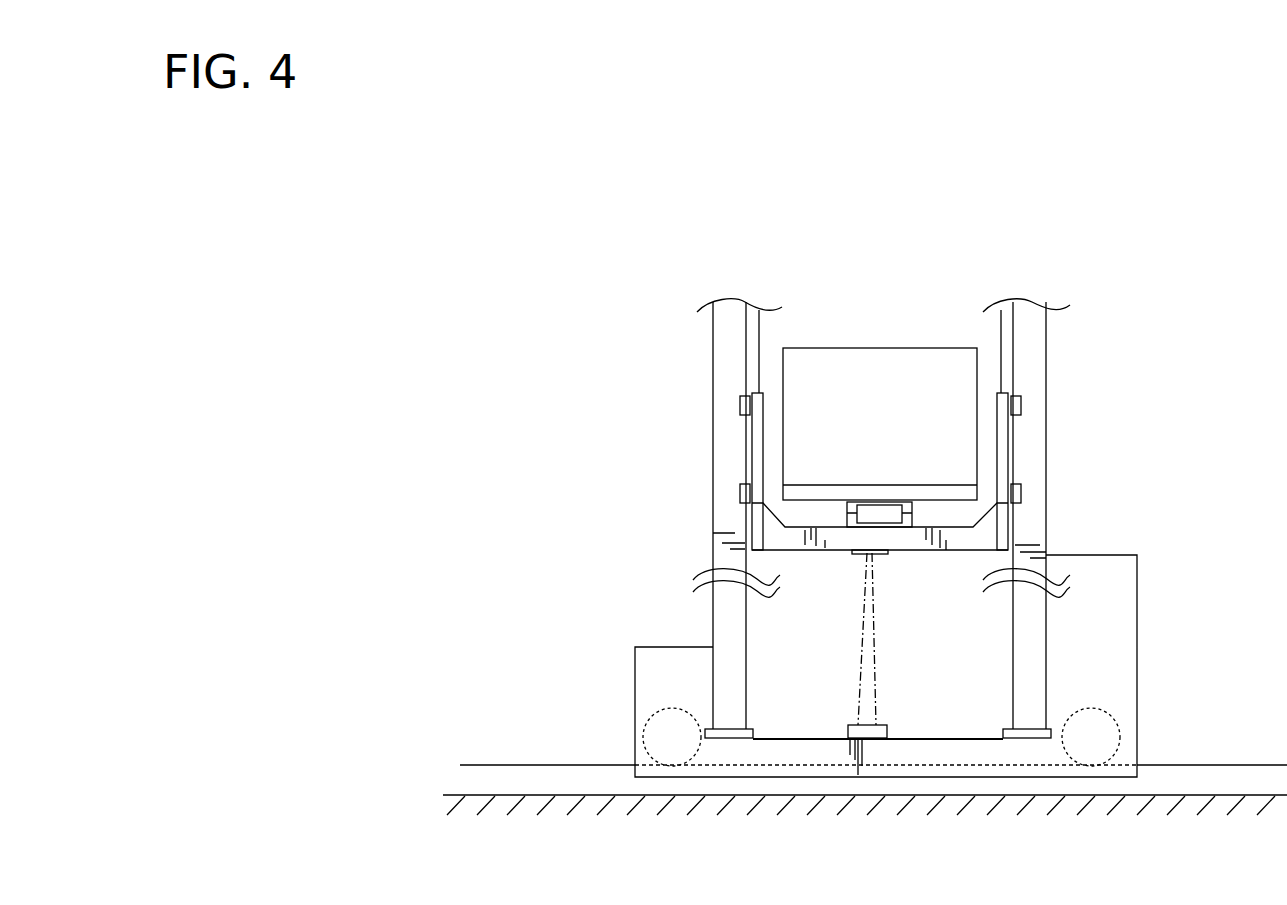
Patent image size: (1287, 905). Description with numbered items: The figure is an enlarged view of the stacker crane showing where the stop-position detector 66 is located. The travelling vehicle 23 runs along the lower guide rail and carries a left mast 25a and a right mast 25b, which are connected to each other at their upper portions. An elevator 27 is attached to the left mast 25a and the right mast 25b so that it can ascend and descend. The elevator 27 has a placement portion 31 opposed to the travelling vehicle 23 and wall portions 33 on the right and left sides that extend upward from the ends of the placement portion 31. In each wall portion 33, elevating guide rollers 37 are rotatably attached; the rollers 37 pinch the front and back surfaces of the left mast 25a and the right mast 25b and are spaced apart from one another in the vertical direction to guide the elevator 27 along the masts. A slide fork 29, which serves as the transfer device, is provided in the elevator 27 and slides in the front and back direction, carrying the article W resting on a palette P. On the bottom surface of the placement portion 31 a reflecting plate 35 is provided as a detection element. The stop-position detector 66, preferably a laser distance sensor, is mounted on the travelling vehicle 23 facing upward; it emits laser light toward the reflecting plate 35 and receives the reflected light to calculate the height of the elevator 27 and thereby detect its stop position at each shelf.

The travelling vehicle 23 is at (1105, 660).
The left mast 25a is at (732, 357).
The right mast 25b is at (1033, 352).
The elevator 27 is at (923, 560).
The slide fork 29 is at (895, 508).
The placement portion 31 is at (795, 540).
The wall portions 33 is at (755, 443).
The reflecting plate 35 is at (860, 557).
The elevating guide rollers 37 is at (740, 405).
The stop-position detector 66 is at (880, 730).
The article W is at (880, 424).
The palette P is at (905, 497).